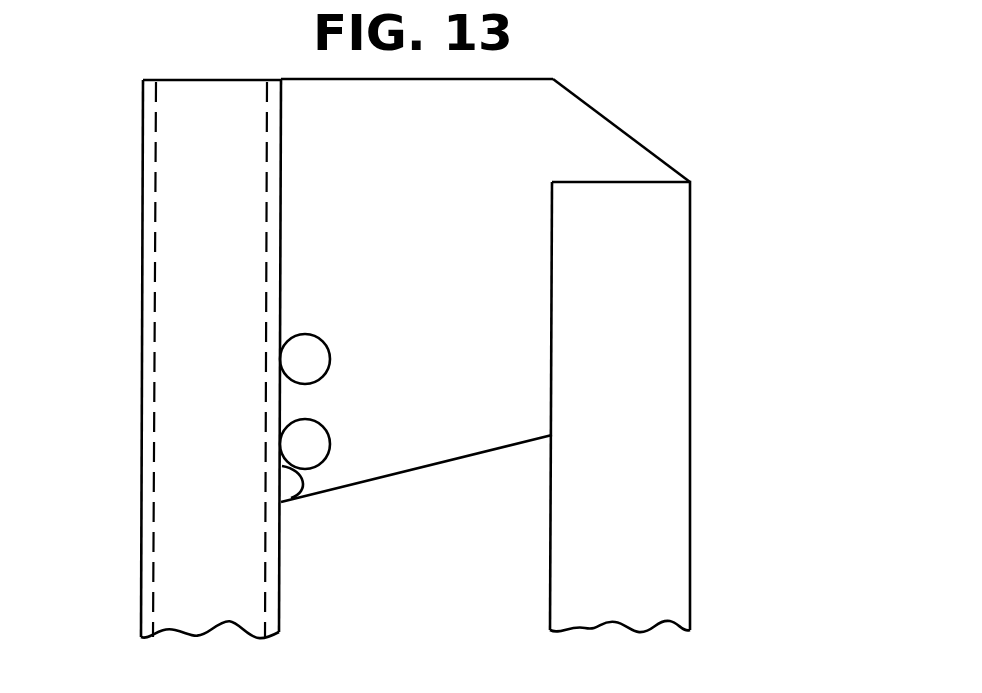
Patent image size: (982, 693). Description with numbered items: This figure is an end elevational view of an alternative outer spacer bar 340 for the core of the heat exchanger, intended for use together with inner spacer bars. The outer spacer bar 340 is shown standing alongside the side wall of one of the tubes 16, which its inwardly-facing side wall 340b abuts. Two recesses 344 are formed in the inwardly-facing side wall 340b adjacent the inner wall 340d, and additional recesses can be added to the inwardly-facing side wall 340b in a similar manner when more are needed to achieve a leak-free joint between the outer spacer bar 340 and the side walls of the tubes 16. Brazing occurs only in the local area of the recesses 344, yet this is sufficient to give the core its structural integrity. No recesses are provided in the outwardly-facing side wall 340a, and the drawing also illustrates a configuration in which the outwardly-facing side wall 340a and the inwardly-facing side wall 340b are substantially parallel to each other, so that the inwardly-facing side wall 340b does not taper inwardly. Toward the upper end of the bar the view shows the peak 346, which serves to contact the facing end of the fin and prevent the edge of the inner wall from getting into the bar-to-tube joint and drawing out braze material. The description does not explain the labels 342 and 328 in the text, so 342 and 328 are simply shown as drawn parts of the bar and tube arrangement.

The tube 16 is at (183, 175).
The outer spacer bar 340 is at (444, 250).
The outwardly-facing side wall 340a is at (552, 340).
The inwardly-facing side wall 340b is at (278, 282).
The inner wall 340d is at (440, 467).
The bracket leg 342 is at (637, 259).
The recess 344 is at (292, 498).
The peak 346 is at (592, 133).
The holes 328 is at (305, 359).